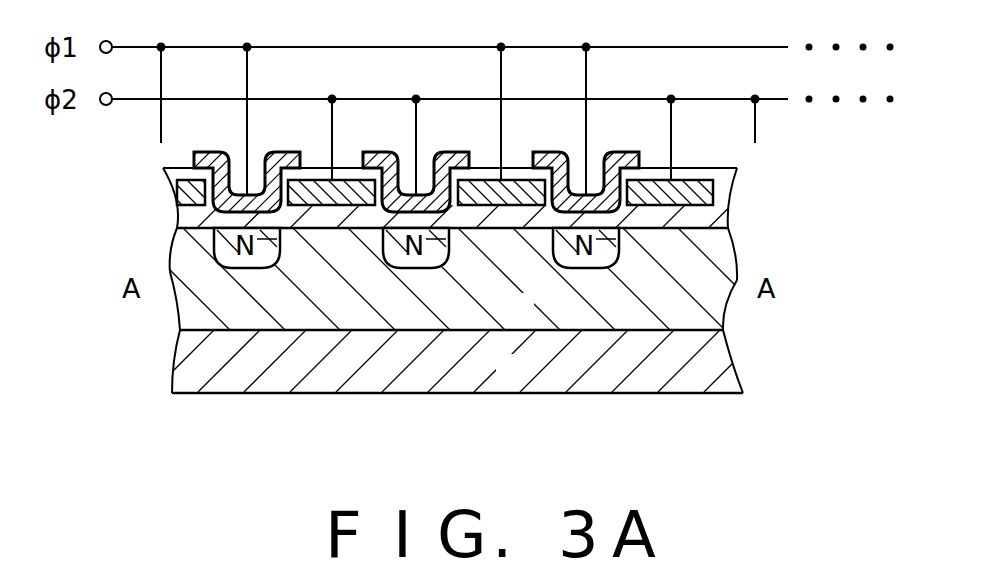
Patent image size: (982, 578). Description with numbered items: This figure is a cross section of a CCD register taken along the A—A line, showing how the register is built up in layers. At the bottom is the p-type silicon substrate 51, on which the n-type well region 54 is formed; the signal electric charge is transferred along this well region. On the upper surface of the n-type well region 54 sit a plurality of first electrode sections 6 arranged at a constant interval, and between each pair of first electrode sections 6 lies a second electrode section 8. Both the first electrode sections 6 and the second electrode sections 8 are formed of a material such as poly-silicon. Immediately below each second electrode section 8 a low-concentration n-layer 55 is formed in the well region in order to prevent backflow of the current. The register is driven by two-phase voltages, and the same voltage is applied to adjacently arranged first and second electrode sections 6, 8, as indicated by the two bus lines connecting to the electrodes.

The first electrode section 6 is at (695, 178).
The second electrode section 8 is at (616, 156).
The p-type silicon substrate 51 is at (718, 372).
The n-type well region 54 is at (716, 310).
The n-layer 55 is at (615, 240).